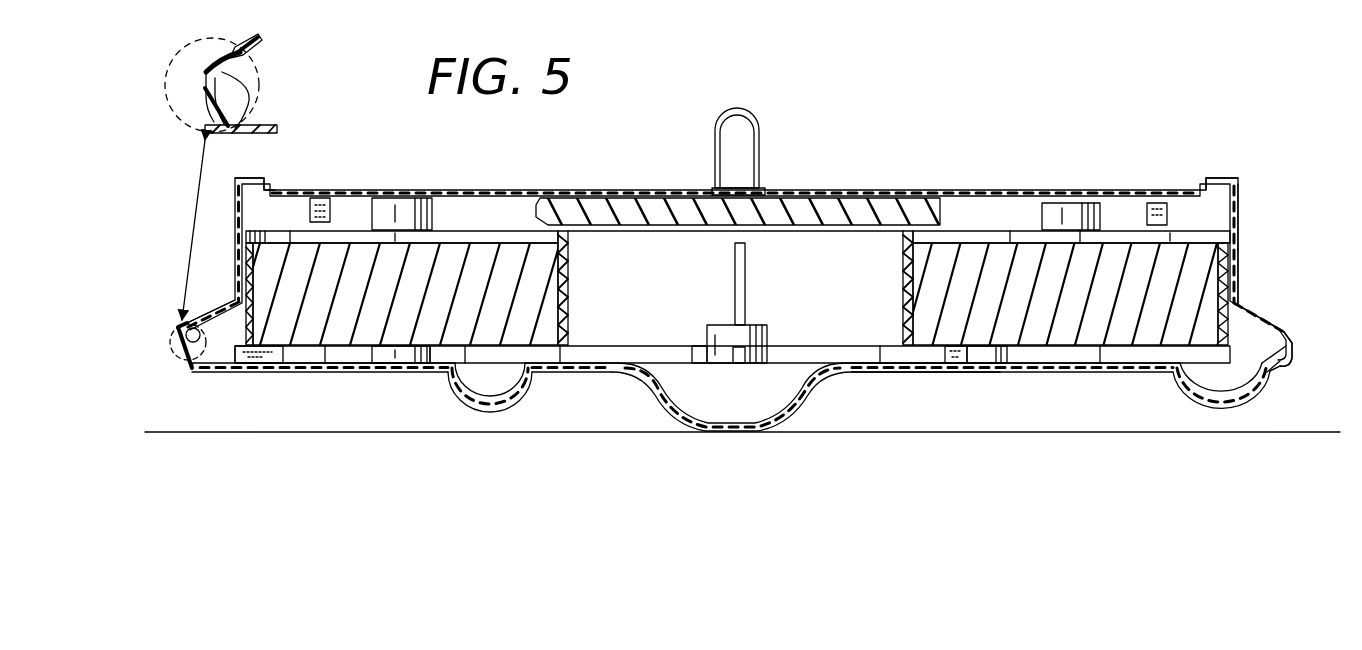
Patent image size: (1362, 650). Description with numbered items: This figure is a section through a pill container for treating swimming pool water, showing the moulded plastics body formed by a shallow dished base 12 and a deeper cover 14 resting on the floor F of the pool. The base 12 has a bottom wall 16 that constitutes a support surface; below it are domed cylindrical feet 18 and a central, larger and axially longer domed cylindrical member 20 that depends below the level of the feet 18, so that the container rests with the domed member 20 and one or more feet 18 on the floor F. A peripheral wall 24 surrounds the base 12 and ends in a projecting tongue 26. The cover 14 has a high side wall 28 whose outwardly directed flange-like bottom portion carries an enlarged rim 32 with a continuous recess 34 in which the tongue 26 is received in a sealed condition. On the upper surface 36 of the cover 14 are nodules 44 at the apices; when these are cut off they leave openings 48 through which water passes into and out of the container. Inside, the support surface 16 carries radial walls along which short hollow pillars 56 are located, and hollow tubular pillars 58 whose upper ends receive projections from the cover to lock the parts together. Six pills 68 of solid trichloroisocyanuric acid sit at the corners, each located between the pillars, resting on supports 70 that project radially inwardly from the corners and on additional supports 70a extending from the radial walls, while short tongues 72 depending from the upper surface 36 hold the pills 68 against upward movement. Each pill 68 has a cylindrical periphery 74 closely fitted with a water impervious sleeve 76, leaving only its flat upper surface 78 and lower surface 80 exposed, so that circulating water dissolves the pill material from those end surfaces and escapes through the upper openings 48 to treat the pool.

The base 12 is at (335, 390).
The cover 14 is at (985, 137).
The bottom wall 16 is at (880, 374).
The feet 18 is at (455, 395).
The central domed cylindrical member 20 is at (668, 395).
The peripheral wall 24 is at (170, 362).
The projecting tongue 26 is at (180, 325).
The side wall 28 is at (1242, 285).
The enlarged rim 32 is at (212, 322).
The continuous recess 34 is at (204, 60).
The upper surface 36 is at (432, 190).
The nodules 44 is at (258, 180).
The openings 48 is at (1242, 205).
The short hollow pillars 56 is at (766, 348).
The hollow tubular pillars 58 is at (1090, 210).
The pills 68 is at (915, 310).
The supports 70 is at (223, 373).
The additional supports 70a is at (700, 352).
The short tongues 72 is at (328, 203).
The cylindrical periphery 74 is at (910, 290).
The water impervious sleeve 76 is at (572, 265).
The upper surface 78 is at (972, 243).
The lower surface 80 is at (958, 364).
The floor F is at (1315, 432).